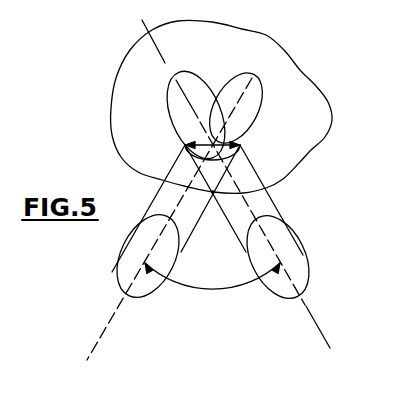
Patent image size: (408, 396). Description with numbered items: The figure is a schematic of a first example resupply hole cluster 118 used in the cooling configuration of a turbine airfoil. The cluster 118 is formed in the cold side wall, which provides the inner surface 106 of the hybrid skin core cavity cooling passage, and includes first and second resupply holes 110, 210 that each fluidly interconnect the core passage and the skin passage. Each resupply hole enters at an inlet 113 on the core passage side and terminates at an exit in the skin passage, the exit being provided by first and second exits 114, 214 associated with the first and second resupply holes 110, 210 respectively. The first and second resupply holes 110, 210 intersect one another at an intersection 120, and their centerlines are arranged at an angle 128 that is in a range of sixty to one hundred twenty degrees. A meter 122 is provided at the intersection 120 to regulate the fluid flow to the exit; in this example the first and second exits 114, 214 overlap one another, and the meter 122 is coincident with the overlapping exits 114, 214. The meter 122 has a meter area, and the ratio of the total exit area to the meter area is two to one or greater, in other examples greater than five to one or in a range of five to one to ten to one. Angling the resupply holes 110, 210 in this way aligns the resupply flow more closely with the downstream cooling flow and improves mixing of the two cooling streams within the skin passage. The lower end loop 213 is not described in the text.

The inner surface 106 is at (299, 102).
The first resupply hole 110 is at (284, 195).
The second resupply hole 210 is at (120, 246).
The first exit 114 is at (183, 73).
The resupply hole cluster 118 is at (271, 66).
The second exit 214 is at (253, 124).
The meter 122 is at (209, 147).
The intersection 120 is at (214, 197).
The angle 128 is at (209, 289).
The second end loop of second fiber 213 is at (121, 285).
The inlet 113 is at (272, 284).